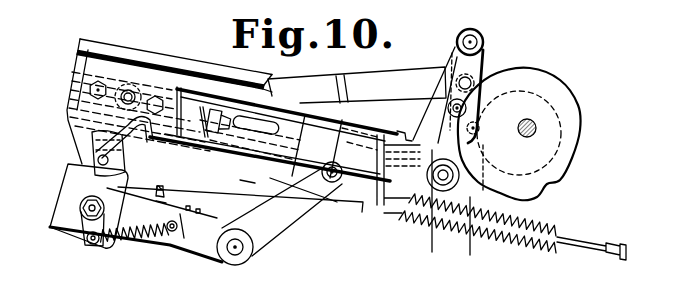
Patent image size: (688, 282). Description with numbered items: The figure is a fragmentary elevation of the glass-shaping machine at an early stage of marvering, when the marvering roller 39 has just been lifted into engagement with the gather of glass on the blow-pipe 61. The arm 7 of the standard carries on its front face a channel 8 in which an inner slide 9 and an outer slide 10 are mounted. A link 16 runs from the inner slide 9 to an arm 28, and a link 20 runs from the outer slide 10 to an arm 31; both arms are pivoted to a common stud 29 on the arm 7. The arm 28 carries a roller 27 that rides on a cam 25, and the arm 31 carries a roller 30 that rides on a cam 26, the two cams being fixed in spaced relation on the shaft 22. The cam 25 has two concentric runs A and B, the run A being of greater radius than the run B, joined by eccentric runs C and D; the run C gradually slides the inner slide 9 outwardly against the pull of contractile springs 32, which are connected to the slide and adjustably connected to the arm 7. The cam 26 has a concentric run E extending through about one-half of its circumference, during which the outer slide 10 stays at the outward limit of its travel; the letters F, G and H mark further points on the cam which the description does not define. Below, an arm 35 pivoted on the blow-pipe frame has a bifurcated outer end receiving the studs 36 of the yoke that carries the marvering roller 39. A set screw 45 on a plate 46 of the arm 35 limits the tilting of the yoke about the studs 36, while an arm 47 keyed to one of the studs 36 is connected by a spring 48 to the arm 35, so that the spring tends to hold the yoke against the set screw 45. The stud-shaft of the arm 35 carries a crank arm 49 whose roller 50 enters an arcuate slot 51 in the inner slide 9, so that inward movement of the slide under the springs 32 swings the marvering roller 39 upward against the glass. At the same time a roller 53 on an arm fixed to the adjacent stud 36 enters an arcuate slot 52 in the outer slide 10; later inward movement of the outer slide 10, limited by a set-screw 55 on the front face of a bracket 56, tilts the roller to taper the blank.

The arm 7 is at (137, 58).
The channel 8 is at (78, 63).
The outer slide 10 is at (83, 87).
The arcuate slot 52 is at (70, 108).
The roller 53 is at (90, 153).
The set-screw 55 is at (193, 110).
The bracket 56 is at (203, 110).
The link 20 is at (357, 85).
The inner slide 9 is at (317, 146).
The marvering roller 39 is at (72, 182).
The studs 36 is at (80, 205).
The arm 47 is at (72, 232).
The spring 48 is at (123, 240).
The arm 35 is at (136, 225).
The set screw 45 is at (165, 199).
The plate 46 is at (203, 215).
The blow-pipe 61 is at (238, 181).
The crank arm 49 is at (273, 227).
The arcuate slot 51 is at (343, 174).
The roller 50 is at (338, 190).
The stud 29 is at (470, 28).
The arm 28 is at (483, 50).
The roller 27 is at (445, 97).
The roller 30 is at (480, 127).
The shaft 22 is at (536, 125).
The concentric run B is at (560, 88).
The eccentric run C is at (502, 72).
The cam point F is at (535, 80).
The cam 26 is at (580, 108).
The cam point G is at (588, 110).
The concentric run E is at (504, 151).
The concentric run A is at (497, 180).
The eccentric run D is at (533, 188).
The cam point H is at (567, 178).
The cam 25 is at (575, 176).
The contractile springs 32 is at (408, 225).
The link 16 is at (482, 205).
The arm 31 is at (512, 231).